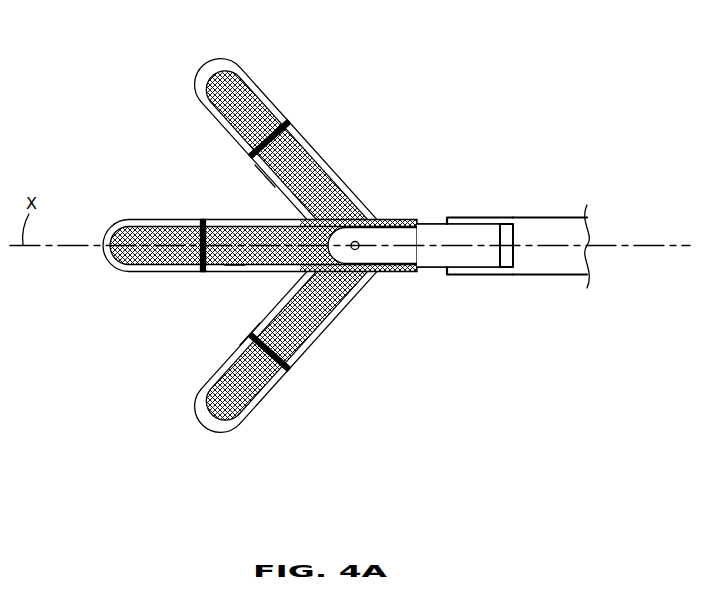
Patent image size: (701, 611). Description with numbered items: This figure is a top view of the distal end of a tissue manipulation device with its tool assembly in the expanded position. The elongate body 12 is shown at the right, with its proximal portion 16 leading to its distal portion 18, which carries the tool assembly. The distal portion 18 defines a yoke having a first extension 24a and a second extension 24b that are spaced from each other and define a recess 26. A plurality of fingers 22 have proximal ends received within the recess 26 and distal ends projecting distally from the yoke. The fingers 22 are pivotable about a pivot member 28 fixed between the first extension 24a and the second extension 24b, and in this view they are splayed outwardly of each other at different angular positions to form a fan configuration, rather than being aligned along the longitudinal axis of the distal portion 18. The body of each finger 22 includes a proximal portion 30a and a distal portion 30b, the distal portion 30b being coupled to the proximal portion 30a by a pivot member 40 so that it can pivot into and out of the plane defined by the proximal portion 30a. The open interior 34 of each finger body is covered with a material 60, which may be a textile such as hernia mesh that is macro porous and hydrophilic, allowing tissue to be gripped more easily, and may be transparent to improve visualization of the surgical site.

The elongate body 12 is at (528, 255).
The proximal portion 16 is at (566, 217).
The distal portion 18 is at (426, 223).
The fingers 22 is at (265, 92).
The first extension 24a is at (468, 217).
The second extension 24b is at (471, 276).
The recess 26 is at (507, 226).
The pivot member 28 is at (358, 241).
The proximal portion 30a is at (348, 184).
The distal portion 30b is at (237, 70).
The open interior 34 is at (321, 158).
The pivot member 40 is at (284, 119).
The material 60 is at (265, 173).